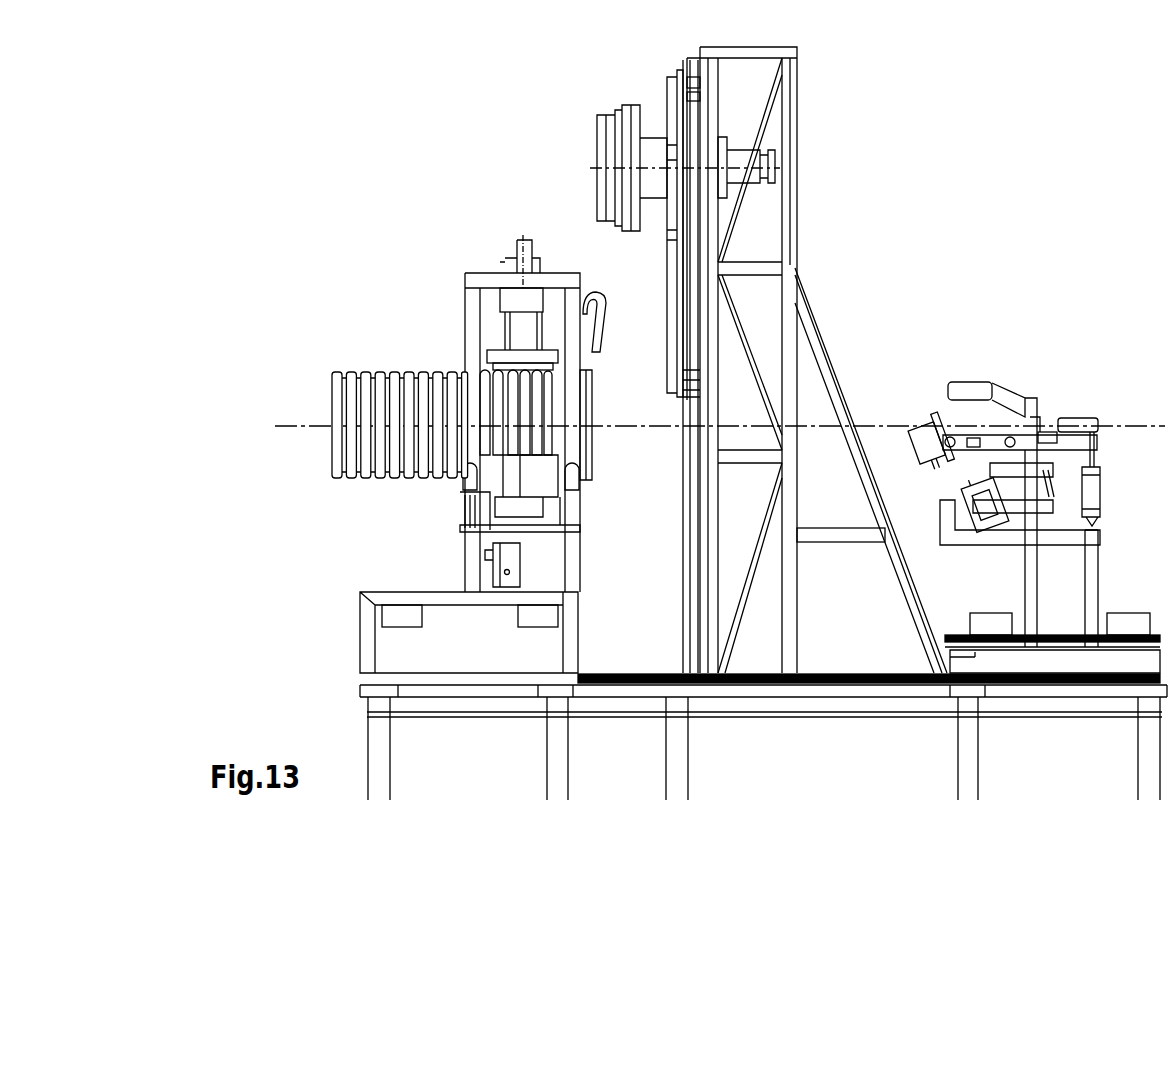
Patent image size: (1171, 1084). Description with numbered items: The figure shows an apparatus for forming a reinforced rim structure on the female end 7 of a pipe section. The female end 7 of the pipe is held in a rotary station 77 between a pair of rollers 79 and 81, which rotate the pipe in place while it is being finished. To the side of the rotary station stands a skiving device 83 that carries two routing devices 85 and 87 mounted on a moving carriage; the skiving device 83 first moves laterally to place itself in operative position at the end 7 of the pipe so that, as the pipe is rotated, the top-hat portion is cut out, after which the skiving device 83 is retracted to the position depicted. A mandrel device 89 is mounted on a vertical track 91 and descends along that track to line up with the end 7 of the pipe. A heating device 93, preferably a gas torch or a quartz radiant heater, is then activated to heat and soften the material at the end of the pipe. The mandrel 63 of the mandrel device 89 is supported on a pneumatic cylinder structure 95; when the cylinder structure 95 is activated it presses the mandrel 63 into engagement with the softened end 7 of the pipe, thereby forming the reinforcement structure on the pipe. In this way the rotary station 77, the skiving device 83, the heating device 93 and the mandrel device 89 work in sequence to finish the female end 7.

The female end 7 is at (608, 410).
The mandrel 63 is at (600, 150).
The rotary station 77 is at (440, 304).
The roller 79 is at (540, 482).
The roller 81 is at (490, 372).
The skiving device 83 is at (1015, 477).
The routing device 85 is at (912, 428).
The routing device 87 is at (977, 497).
The mandrel device 89 is at (648, 82).
The vertical track 91 is at (705, 508).
The heating device 93 is at (575, 312).
The pneumatic cylinder structure 95 is at (722, 140).